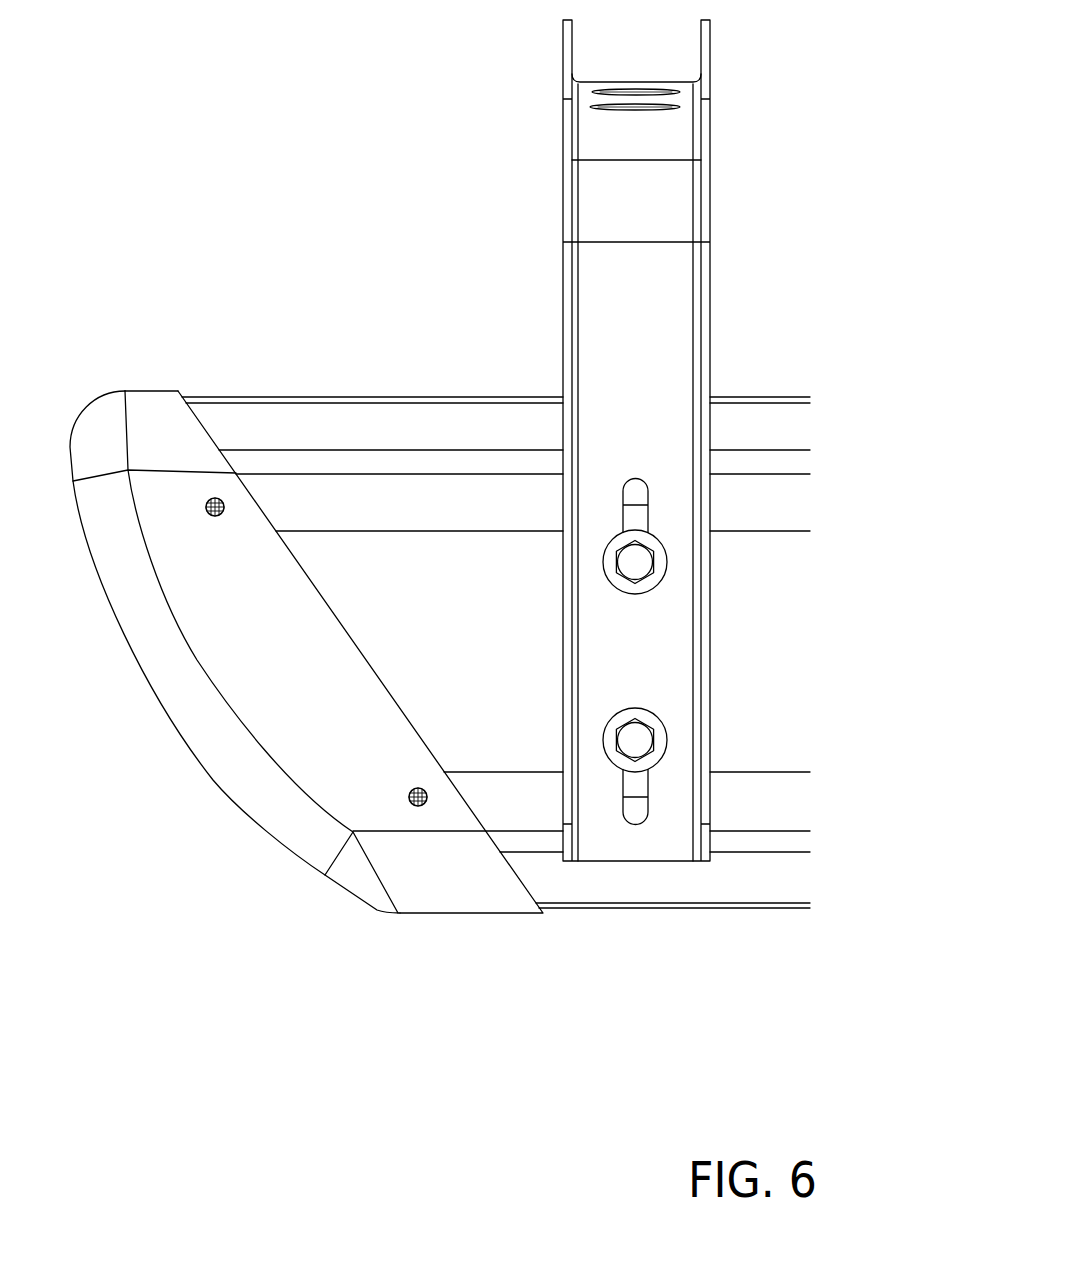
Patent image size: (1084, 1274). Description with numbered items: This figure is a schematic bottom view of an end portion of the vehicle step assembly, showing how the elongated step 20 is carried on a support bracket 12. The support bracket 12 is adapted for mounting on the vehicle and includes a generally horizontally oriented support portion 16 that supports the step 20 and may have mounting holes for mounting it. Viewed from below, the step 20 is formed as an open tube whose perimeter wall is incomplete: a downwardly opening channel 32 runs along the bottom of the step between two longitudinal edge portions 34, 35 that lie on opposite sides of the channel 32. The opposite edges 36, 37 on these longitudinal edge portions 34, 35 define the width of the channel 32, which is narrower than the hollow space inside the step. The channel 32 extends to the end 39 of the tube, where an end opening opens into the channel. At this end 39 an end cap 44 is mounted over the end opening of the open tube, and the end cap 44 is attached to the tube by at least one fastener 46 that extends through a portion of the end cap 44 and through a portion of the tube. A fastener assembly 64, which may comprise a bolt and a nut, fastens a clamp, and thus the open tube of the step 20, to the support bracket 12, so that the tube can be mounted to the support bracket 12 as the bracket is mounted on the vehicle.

The support bracket 12 is at (733, 243).
The support portion 16 is at (668, 362).
The elongated step 20 is at (658, 956).
The channel 32 is at (770, 580).
The longitudinal edge portion 34 is at (430, 503).
The longitudinal edge portion 35 is at (505, 800).
The edge 36 is at (353, 530).
The edge 37 is at (490, 768).
The end of the tube 39 is at (213, 423).
The end cap 44 is at (260, 717).
The fastener 46 is at (408, 797).
The fastener assembly 64 is at (633, 743).